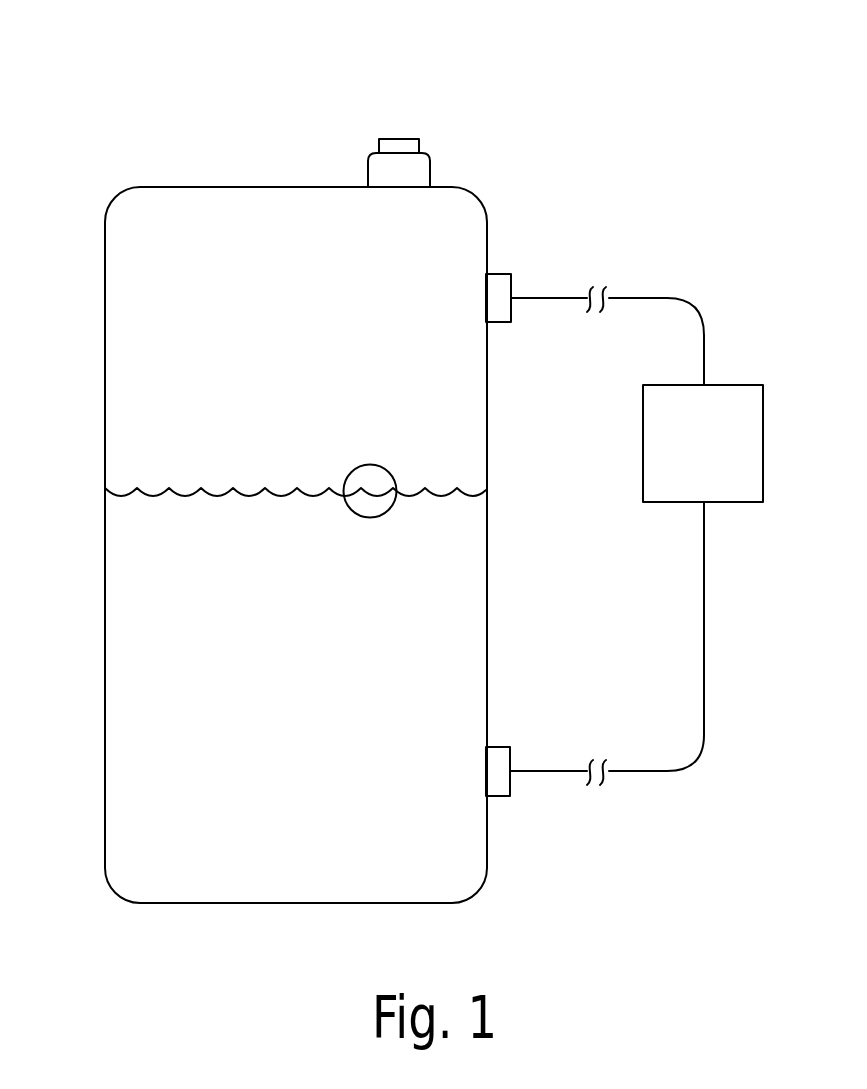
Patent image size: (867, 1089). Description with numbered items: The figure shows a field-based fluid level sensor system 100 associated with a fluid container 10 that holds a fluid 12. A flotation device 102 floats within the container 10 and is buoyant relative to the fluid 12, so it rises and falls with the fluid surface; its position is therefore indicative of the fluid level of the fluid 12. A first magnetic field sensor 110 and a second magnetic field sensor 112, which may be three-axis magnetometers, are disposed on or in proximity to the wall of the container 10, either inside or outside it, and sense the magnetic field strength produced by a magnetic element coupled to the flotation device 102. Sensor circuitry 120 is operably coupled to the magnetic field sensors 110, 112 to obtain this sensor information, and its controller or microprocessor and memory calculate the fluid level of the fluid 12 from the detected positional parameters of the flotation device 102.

The fluid level sensor system 100 is at (98, 103).
The container 10 is at (105, 377).
The fluid 12 is at (260, 669).
The flotation device 102 is at (358, 466).
The first magnetic field sensor 110 is at (500, 322).
The second magnetic field sensor 112 is at (510, 758).
The sensor circuitry 120 is at (743, 385).